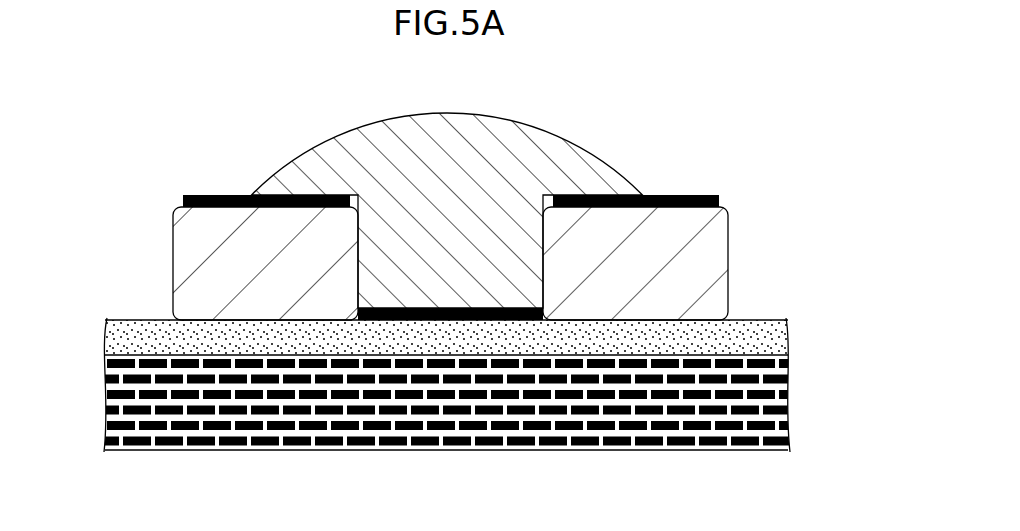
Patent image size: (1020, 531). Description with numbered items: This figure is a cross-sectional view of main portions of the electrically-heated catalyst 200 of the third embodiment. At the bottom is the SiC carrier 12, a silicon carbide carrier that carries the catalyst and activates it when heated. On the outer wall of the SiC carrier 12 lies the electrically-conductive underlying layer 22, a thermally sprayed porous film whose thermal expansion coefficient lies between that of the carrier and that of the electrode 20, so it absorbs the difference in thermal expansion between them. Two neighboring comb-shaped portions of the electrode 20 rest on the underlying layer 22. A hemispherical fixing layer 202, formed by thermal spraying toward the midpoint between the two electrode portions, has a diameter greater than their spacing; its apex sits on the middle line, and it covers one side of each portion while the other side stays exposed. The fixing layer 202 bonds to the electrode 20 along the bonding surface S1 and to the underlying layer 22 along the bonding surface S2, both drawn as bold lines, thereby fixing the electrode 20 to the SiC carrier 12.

The electrically-heated catalyst 200 is at (140, 205).
The fixing layer 202 is at (537, 136).
The electrode 20 is at (451, 263).
The underlying layer 22 is at (105, 330).
The SiC carrier 12 is at (735, 450).
The bonding surface S1 is at (205, 193).
The bonding surface S2 is at (455, 316).